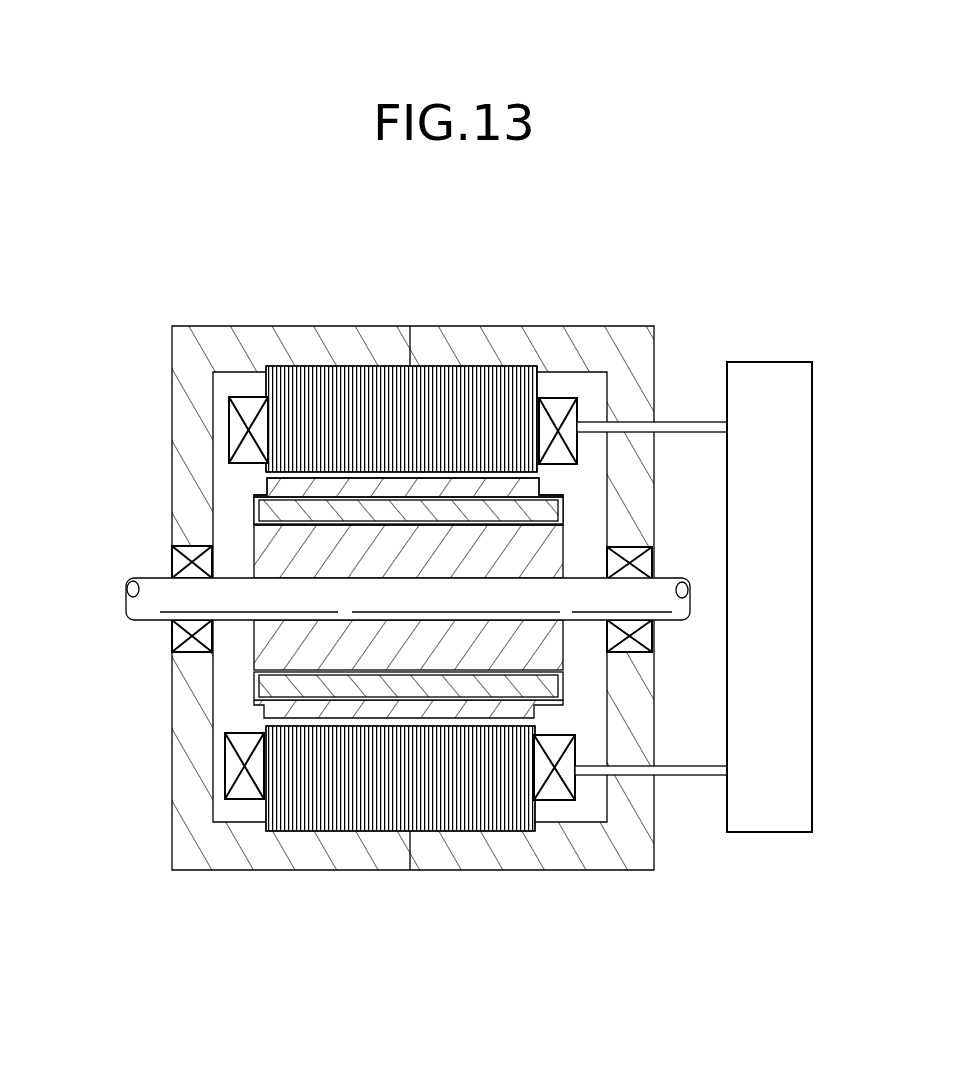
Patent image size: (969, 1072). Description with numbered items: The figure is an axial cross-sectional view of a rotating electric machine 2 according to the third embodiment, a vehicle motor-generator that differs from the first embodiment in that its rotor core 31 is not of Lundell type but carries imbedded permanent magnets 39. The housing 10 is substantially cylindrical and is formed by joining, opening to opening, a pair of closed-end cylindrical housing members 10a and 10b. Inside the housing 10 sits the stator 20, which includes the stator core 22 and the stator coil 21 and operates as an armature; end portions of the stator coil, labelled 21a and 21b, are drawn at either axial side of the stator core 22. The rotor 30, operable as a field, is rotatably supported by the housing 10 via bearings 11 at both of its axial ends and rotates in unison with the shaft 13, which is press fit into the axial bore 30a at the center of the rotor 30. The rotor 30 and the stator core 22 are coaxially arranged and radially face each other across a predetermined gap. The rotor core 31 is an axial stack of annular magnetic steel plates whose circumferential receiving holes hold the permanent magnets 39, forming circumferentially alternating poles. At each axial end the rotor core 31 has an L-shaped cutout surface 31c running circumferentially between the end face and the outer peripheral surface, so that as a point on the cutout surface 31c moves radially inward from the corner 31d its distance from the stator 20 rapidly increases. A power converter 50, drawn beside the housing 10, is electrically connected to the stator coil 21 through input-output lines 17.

The rotating electric machine 2 is at (455, 586).
The housing 10 is at (413, 525).
The housing member 10a is at (363, 340).
The housing member 10b is at (448, 340).
The bearing 11 is at (180, 563).
The shaft 13 is at (126, 606).
The input-output lines 17 is at (697, 422).
The stator 20 is at (405, 618).
The stator coil 21 is at (242, 790).
The stator core end portion 21a is at (558, 412).
The stator core end portion 21b is at (250, 407).
The stator core 22 is at (309, 815).
The rotor 30 is at (380, 591).
The axial bore 30a is at (347, 618).
The rotor core 31 is at (293, 645).
The cutout surface 31c is at (262, 486).
The corner 31d is at (266, 479).
The permanent magnet 39 is at (280, 687).
The power converter 50 is at (813, 447).